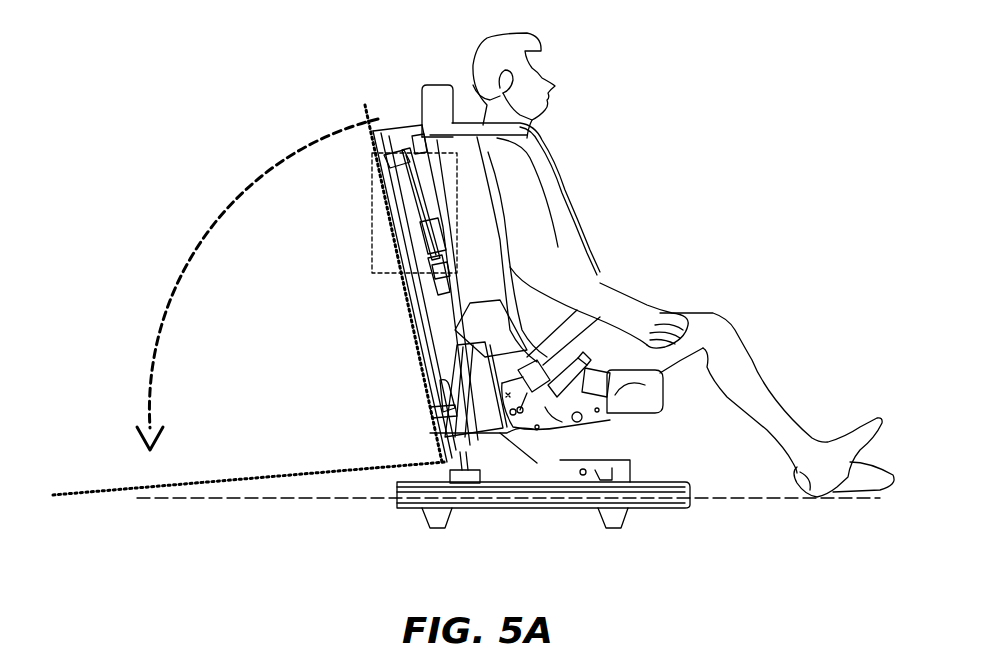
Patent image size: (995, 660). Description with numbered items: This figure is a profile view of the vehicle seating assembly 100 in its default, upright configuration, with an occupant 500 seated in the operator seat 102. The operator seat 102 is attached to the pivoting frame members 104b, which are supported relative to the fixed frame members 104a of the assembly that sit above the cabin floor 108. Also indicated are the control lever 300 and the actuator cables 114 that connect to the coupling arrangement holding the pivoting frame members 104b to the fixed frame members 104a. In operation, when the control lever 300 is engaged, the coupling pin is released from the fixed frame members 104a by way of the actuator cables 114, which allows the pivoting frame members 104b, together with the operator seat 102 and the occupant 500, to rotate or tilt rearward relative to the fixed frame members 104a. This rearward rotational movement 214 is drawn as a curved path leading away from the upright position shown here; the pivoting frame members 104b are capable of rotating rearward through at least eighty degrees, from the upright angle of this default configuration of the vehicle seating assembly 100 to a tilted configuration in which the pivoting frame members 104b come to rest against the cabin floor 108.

The vehicle seating assembly 100 is at (183, 58).
The operator seat 102 is at (482, 277).
The fixed frame members 104a is at (537, 467).
The pivoting frame members 104b is at (407, 135).
The cabin floor 108 is at (293, 500).
The actuator cables 114 is at (433, 277).
The rearward rotational movement 214 is at (235, 250).
The control lever 300 is at (410, 227).
The occupant 500 is at (555, 198).